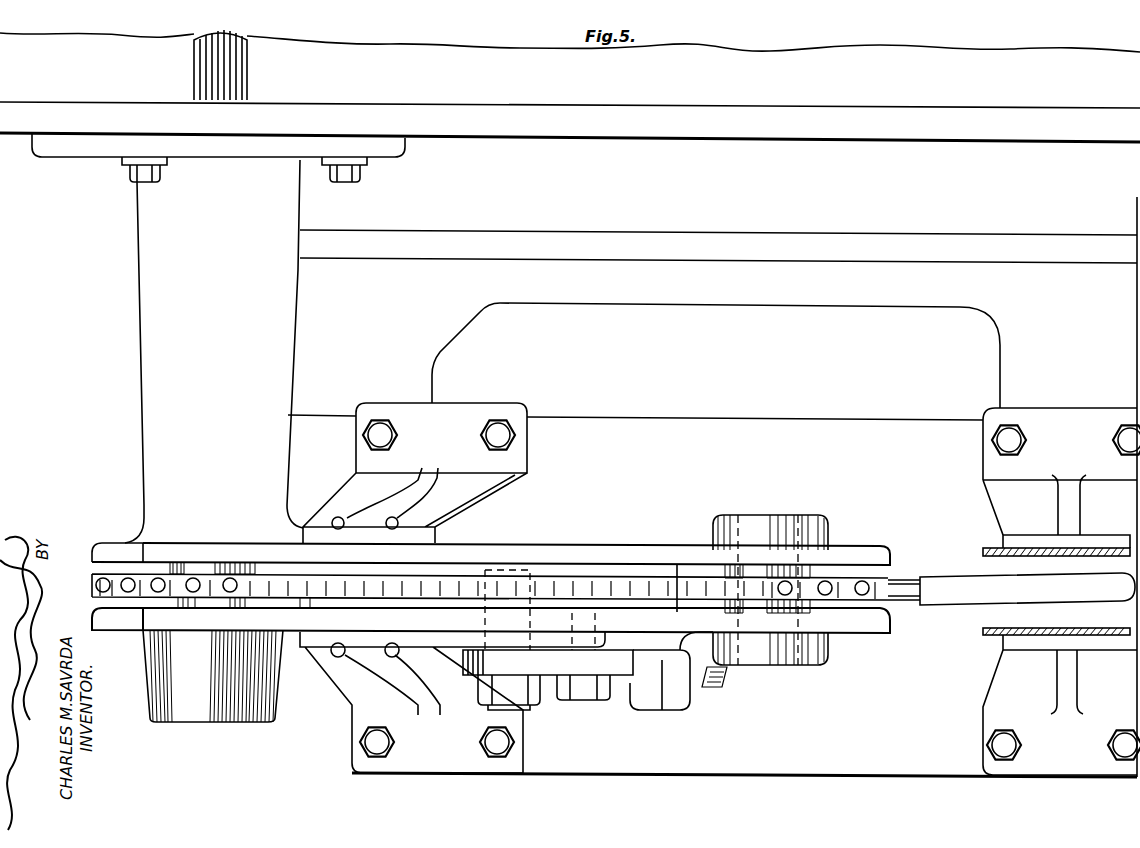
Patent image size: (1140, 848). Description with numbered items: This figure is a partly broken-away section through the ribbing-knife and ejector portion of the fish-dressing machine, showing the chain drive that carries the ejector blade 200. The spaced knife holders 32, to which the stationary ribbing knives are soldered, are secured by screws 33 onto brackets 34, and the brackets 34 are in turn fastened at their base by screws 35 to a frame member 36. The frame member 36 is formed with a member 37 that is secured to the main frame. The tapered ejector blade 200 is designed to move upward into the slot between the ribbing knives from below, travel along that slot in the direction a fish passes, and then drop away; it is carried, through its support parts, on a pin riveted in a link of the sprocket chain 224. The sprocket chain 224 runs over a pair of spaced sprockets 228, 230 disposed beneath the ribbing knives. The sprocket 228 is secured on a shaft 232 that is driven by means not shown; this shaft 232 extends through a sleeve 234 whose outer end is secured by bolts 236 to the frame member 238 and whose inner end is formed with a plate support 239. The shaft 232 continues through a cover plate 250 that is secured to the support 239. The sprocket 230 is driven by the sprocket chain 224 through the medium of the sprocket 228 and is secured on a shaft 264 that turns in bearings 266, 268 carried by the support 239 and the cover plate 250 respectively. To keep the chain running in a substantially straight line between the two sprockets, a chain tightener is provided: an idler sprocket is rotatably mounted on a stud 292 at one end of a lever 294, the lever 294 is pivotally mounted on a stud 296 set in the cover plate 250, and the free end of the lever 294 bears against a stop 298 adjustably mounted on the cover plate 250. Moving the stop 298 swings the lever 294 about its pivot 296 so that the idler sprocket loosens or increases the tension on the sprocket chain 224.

The shaft 232 is at (243, 70).
The frame member 238 is at (832, 134).
The bolts 236 is at (131, 170).
The sleeve 234 is at (148, 349).
The frame member 36 is at (742, 770).
The member 37 is at (619, 298).
The brackets 34 is at (477, 505).
The screws 35 is at (483, 434).
The screws 33 is at (350, 514).
The sprocket 228 is at (115, 541).
The plate support 239 is at (866, 557).
The cover plate 250 is at (119, 622).
The sprocket chain 224 is at (546, 577).
The sprocket 230 is at (878, 584).
The ejector blade 200 is at (972, 603).
The knife holders 32 is at (1056, 591).
The bearing 266 is at (815, 515).
The bearing 268 is at (826, 668).
The shaft 264 is at (738, 660).
The lever 294 is at (552, 672).
The stud 292 is at (505, 706).
The stud 296 is at (585, 700).
The stop 298 is at (716, 688).